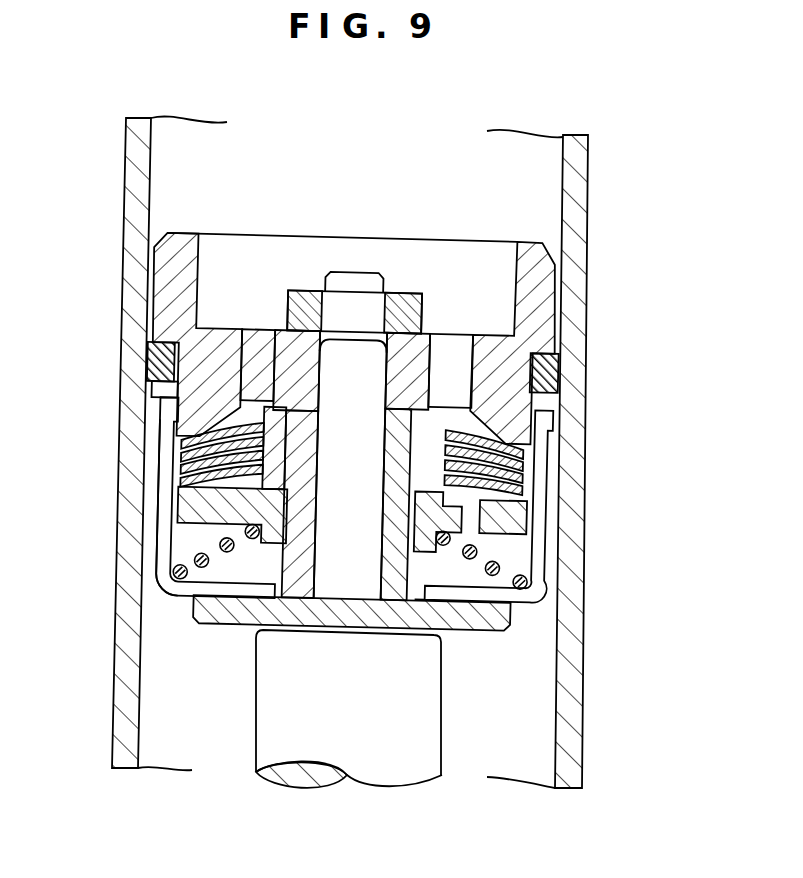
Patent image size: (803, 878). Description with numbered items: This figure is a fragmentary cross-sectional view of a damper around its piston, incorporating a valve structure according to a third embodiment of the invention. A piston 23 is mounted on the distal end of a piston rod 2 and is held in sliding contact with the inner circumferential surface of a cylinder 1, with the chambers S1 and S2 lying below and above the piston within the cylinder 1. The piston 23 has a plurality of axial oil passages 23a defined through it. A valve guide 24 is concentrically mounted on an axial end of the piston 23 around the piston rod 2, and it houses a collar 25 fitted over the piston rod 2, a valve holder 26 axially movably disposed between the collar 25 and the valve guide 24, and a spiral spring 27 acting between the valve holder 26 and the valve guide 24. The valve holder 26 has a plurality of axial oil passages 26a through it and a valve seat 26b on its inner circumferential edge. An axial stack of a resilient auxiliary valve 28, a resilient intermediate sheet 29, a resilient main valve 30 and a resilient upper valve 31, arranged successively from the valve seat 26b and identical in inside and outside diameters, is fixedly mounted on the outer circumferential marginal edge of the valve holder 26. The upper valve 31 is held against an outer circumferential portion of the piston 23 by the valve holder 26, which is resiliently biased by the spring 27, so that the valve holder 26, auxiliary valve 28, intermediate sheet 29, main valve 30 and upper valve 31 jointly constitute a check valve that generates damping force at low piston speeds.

The cylinder 1 is at (127, 172).
The piston rod 2 is at (397, 778).
The piston 23 is at (170, 300).
The axial oil passages 23a is at (244, 368).
The valve guide 24 is at (167, 577).
The collar 25 is at (395, 436).
The valve holder 26 is at (540, 546).
The axial oil passages 26a is at (469, 508).
The valve seat 26b is at (416, 465).
The spiral spring 27 is at (511, 600).
The auxiliary valve 28 is at (525, 496).
The intermediate sheet 29 is at (512, 478).
The main valve 30 is at (505, 461).
The upper valve 31 is at (505, 446).
The lower chamber S1 is at (200, 712).
The upper chamber S2 is at (205, 158).